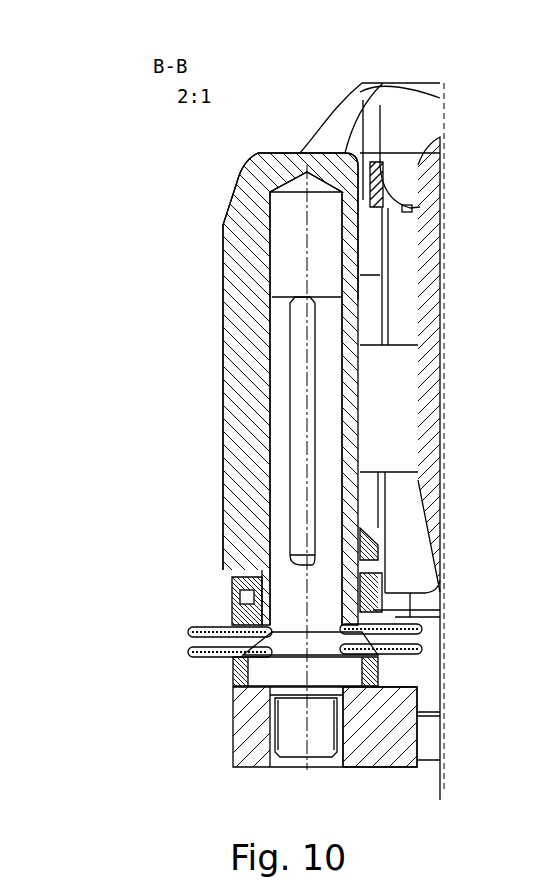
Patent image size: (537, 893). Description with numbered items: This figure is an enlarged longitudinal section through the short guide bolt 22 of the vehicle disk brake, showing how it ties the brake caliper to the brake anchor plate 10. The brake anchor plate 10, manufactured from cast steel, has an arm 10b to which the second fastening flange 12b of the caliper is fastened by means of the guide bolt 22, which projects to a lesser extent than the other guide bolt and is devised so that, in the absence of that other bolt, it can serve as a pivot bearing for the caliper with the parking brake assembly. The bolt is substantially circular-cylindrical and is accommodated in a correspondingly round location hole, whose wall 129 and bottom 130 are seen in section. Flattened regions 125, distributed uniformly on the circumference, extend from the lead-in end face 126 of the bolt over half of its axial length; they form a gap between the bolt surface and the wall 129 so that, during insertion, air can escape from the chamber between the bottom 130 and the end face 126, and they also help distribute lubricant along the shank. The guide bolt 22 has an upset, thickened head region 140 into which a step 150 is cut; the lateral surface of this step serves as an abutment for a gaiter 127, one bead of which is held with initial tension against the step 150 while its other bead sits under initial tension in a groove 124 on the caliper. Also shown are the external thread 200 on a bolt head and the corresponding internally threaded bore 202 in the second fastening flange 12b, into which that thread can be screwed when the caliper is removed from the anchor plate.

The brake anchor plate 10 is at (431, 373).
The arm of the brake anchor plate 10b is at (248, 348).
The second fastening flange 12b is at (372, 750).
The guide bolt 22 is at (297, 591).
The groove 124 is at (377, 563).
The flattened regions 125 is at (298, 481).
The end face 126 is at (317, 297).
The gaiter 127 is at (417, 623).
The wall of the location hole 129 is at (258, 247).
The bottom of the location hole 130 is at (320, 178).
The thickened head region 140 is at (277, 640).
The step 150 is at (380, 680).
The external thread 200 is at (287, 727).
The threaded bore 202 is at (337, 757).